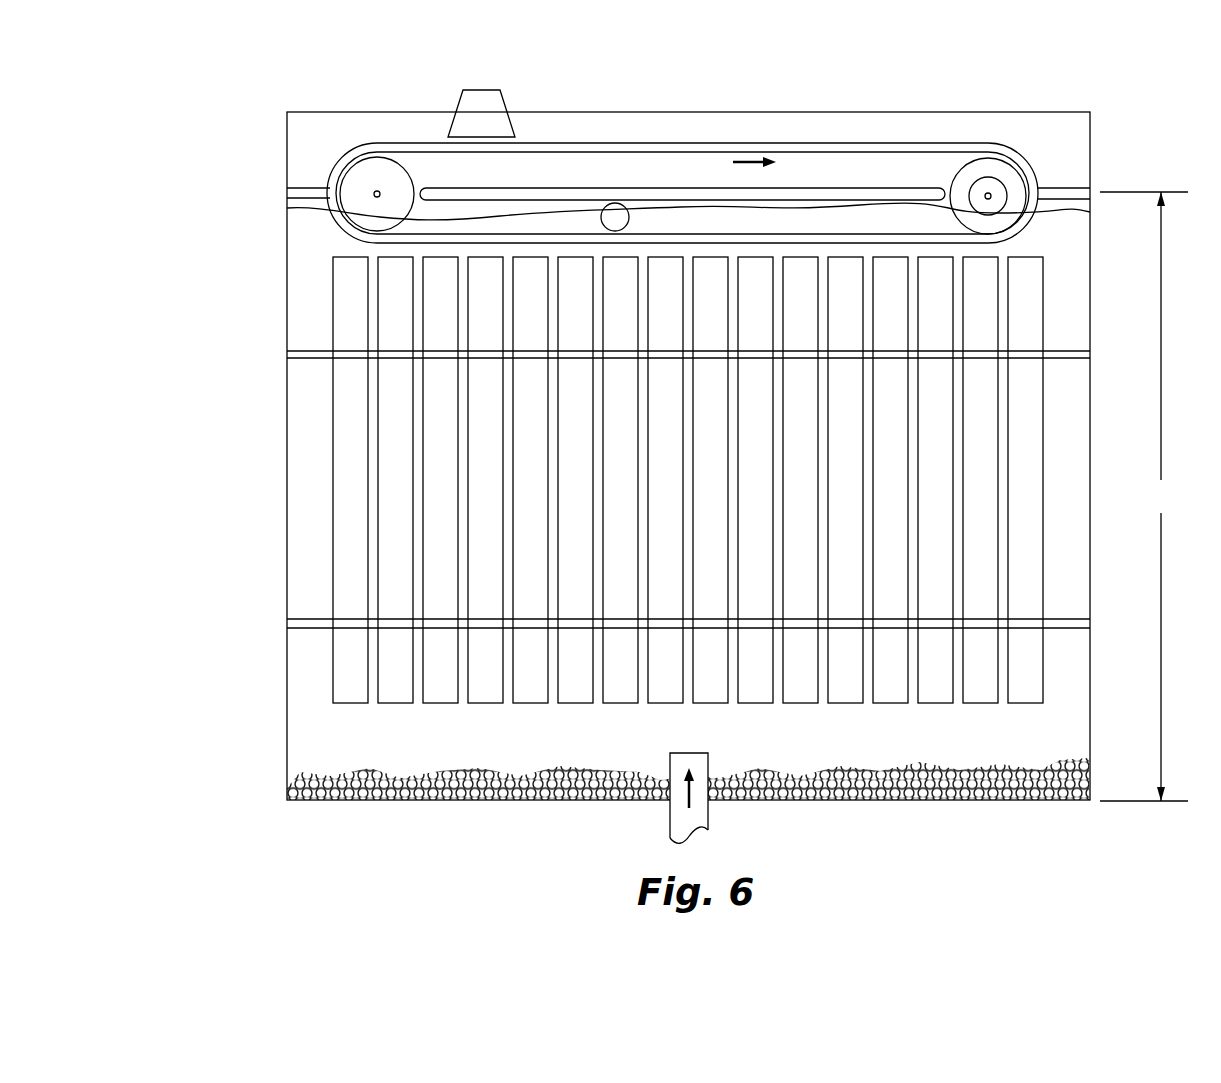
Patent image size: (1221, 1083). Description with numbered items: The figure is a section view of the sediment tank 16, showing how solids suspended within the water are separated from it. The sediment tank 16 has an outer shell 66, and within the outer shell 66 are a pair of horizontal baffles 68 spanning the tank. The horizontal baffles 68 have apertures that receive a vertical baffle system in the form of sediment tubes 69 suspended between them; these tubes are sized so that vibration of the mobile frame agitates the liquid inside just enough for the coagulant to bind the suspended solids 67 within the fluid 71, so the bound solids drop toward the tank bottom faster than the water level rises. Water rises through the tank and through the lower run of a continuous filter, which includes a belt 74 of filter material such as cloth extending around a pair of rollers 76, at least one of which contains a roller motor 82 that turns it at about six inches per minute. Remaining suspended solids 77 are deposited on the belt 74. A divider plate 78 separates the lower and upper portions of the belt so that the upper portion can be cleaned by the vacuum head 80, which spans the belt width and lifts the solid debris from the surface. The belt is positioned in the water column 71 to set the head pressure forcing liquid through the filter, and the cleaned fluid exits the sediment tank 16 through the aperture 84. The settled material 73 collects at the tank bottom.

The sediment tank 16 is at (714, 439).
The outer shell 66 is at (287, 557).
The suspended solids 67 is at (622, 480).
The horizontal baffles 68 is at (313, 355).
The sediment tubes 69 is at (350, 398).
The fluid 71 is at (1144, 496).
The sediment bed 73 is at (325, 738).
The belt 74 is at (812, 145).
The rollers 76 is at (350, 188).
The suspended solids 77 is at (355, 142).
The divider plate 78 is at (543, 188).
The vacuum head 80 is at (473, 110).
The roller motor 82 is at (988, 193).
The aperture 84 is at (629, 214).